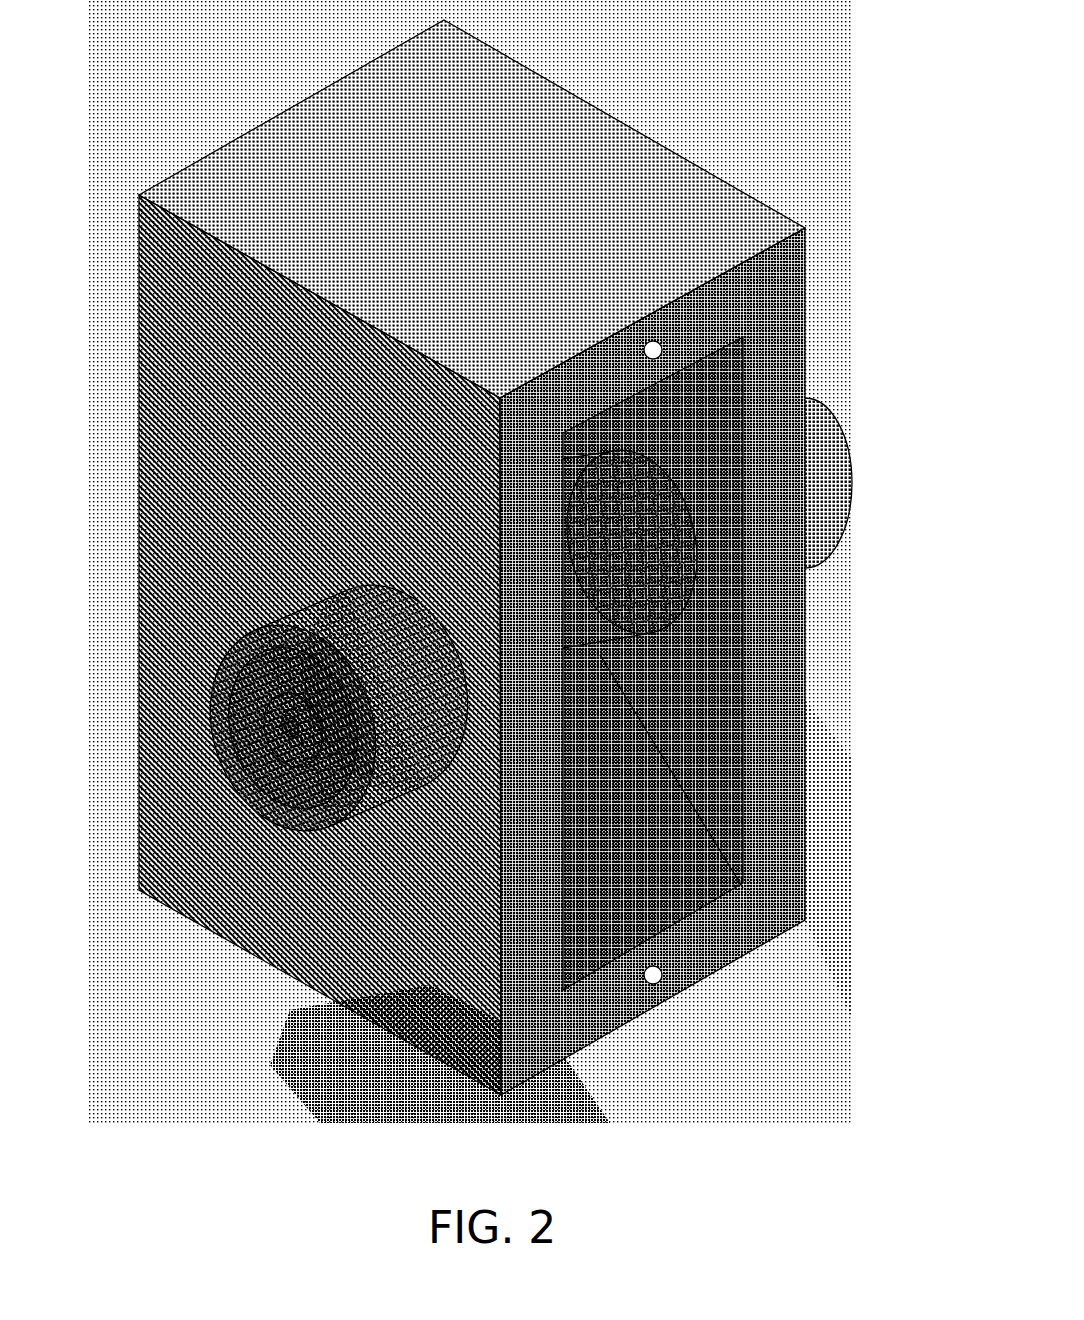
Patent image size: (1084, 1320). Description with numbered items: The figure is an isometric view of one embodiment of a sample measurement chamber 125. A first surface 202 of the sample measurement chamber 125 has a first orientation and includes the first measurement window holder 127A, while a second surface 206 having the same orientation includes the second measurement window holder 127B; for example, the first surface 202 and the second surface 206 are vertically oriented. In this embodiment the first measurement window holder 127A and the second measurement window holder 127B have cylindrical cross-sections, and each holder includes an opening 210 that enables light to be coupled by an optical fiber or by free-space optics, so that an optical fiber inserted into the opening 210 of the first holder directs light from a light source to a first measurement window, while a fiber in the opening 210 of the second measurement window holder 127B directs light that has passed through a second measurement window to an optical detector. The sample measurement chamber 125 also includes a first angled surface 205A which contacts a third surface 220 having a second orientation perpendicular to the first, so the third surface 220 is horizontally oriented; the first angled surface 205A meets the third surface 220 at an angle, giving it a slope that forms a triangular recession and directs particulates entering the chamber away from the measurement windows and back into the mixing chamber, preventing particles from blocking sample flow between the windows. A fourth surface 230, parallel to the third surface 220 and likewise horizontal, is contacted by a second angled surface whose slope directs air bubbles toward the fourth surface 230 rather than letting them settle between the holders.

The sample measurement chamber 125 is at (670, 133).
The first surface 202 is at (287, 425).
The second surface 206 is at (780, 693).
The first angled surface 205A is at (655, 873).
The fourth surface 230 is at (698, 322).
The third surface 220 is at (612, 1013).
The first measurement window holder 127A is at (303, 620).
The second measurement window holder 127B is at (827, 513).
The opening 210 is at (283, 727).